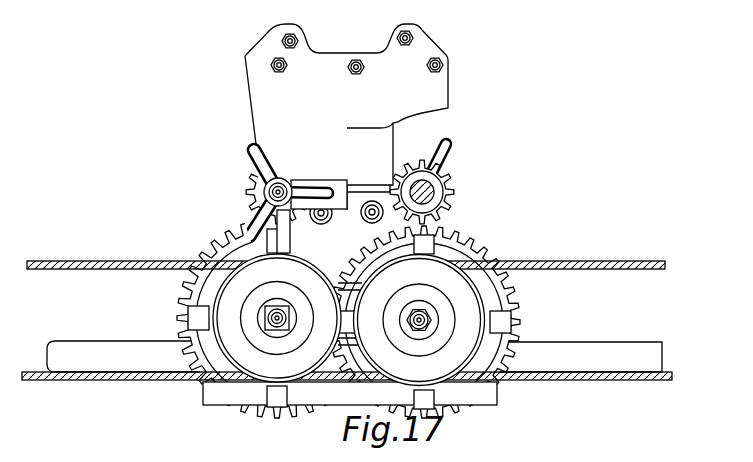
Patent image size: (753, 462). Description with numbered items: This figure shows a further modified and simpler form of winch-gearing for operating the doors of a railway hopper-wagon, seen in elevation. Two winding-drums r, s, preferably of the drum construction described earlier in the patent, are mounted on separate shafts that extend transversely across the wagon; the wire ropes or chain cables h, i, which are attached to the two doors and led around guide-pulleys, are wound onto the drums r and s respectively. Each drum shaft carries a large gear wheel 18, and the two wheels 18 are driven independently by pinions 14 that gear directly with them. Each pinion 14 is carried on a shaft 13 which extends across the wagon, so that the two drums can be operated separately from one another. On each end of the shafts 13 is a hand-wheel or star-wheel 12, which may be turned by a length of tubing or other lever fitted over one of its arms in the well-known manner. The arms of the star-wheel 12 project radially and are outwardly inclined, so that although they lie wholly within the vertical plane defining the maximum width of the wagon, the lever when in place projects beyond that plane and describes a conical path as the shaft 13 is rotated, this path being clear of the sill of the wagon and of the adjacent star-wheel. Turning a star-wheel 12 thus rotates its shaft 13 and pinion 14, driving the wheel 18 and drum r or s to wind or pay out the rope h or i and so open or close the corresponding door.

The star-wheel 12 is at (263, 164).
The shaft 13 is at (268, 192).
The pinion 14 is at (249, 198).
The wheel 18 is at (185, 282).
The guide block f is at (108, 352).
The wire rope h is at (116, 381).
The wire rope i is at (583, 381).
The winding-drum r is at (277, 318).
The winding-drum s is at (419, 320).